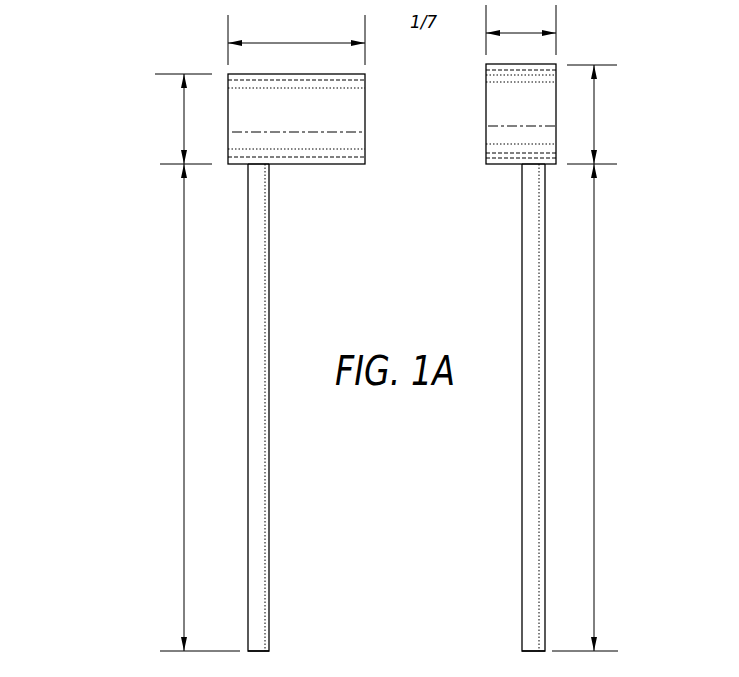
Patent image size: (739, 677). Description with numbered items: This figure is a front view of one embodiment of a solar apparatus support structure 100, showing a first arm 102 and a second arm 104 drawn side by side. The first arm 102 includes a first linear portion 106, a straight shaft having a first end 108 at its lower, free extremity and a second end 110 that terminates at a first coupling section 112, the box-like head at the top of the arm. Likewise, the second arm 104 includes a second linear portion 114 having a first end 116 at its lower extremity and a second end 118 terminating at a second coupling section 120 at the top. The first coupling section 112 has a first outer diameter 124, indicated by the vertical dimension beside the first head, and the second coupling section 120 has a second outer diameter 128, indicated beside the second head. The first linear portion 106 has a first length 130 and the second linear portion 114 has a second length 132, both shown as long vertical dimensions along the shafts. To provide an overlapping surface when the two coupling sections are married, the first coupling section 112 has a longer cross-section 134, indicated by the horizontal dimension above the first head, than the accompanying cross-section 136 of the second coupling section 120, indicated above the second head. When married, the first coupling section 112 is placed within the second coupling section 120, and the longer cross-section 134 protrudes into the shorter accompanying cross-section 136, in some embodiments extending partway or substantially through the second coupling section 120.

The solar apparatus support structure 100 is at (217, 68).
The first arm 102 is at (170, 323).
The second arm 104 is at (505, 528).
The first linear portion 106 is at (268, 326).
The first end 108 is at (270, 635).
The second end 110 is at (269, 164).
The first coupling section 112 is at (345, 123).
The second linear portion 114 is at (522, 430).
The first end 116 is at (522, 640).
The second end 118 is at (520, 164).
The second coupling section 120 is at (508, 104).
The first outer diameter 124 is at (184, 118).
The second outer diameter 128 is at (595, 114).
The first length 130 is at (184, 387).
The second length 132 is at (595, 380).
The longer cross-section 134 is at (302, 43).
The accompanying cross-section 136 is at (520, 33).